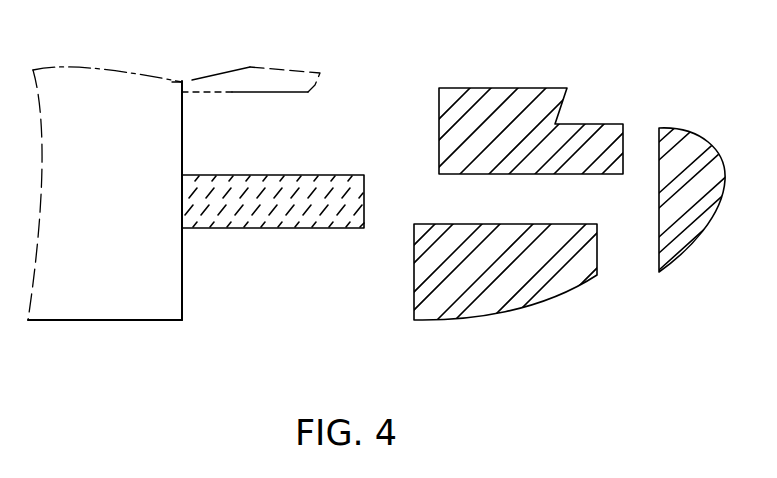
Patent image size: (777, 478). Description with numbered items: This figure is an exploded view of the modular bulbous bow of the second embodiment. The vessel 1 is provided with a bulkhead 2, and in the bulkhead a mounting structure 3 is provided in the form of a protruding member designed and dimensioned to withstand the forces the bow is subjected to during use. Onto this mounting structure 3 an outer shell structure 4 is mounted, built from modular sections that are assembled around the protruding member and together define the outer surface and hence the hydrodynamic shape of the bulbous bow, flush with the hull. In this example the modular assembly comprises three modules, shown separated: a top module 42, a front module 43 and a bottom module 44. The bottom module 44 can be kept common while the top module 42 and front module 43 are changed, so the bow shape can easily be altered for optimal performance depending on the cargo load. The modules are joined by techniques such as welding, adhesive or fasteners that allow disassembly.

The vessel 1 is at (107, 303).
The bulkhead 2 is at (182, 288).
The mounting structure 3 is at (320, 216).
The outer shell structure 4 is at (436, 55).
The top module 42 is at (503, 97).
The front module 43 is at (693, 146).
The bottom module 44 is at (492, 298).